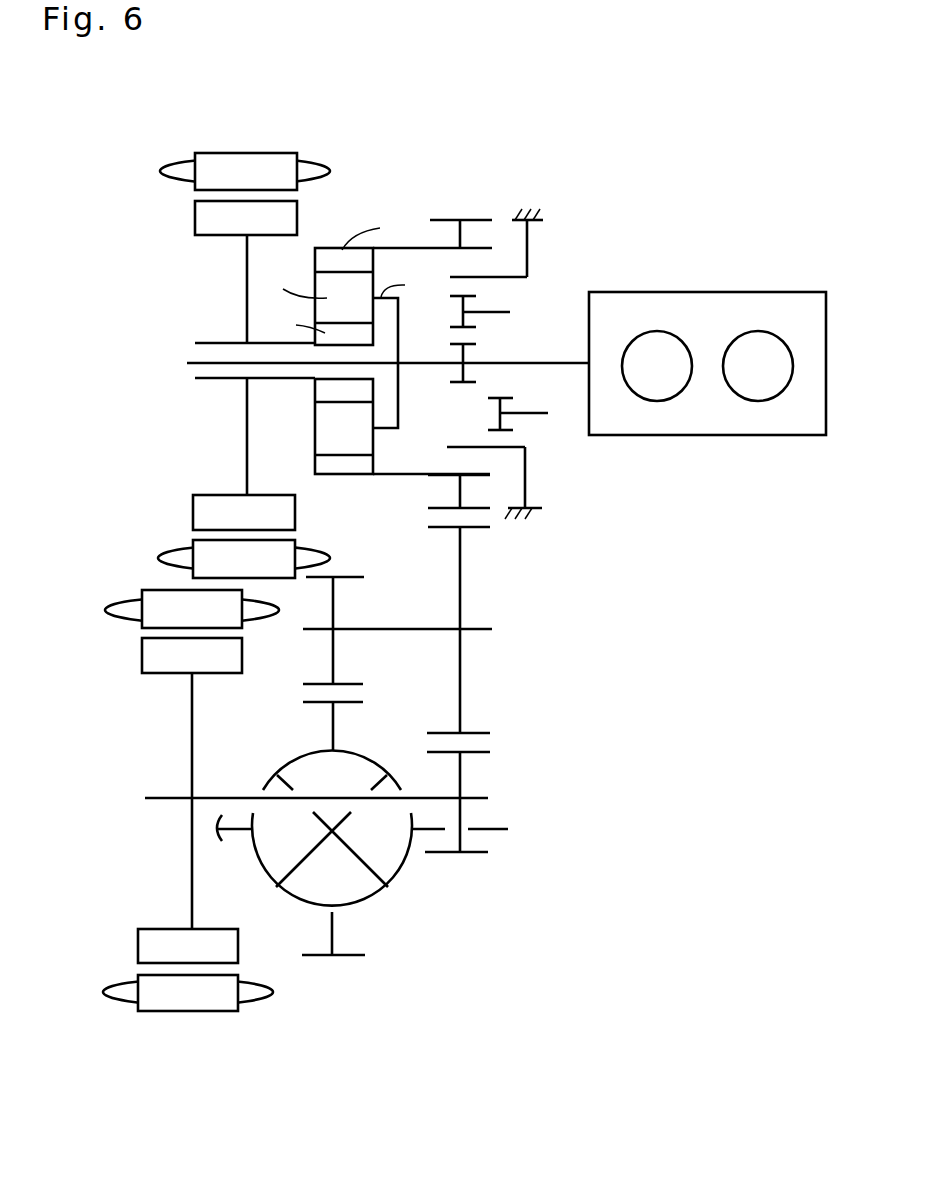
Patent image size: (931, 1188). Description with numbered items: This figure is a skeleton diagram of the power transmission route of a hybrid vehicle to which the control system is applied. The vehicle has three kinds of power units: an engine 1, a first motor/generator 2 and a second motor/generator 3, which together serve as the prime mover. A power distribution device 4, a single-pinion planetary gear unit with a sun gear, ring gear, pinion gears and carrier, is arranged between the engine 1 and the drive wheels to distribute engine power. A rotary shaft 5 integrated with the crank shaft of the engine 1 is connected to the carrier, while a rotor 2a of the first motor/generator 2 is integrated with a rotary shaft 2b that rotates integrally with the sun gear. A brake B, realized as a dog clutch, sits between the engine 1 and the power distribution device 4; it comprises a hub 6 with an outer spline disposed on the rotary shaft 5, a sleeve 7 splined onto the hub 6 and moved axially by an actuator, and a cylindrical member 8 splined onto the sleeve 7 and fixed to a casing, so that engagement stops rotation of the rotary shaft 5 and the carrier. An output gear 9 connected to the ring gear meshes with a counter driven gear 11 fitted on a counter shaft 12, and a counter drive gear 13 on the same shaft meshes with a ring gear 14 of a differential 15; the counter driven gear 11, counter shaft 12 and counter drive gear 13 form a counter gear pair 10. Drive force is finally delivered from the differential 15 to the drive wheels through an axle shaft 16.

The engine 1 is at (760, 292).
The first motor/generator 2 is at (150, 148).
The rotor 2a is at (193, 514).
The rotary shaft 2b is at (280, 383).
The second motor/generator 3 is at (115, 588).
The power distribution device 4 is at (352, 215).
The rotary shaft 5 is at (540, 363).
The hub 6 is at (478, 343).
The sleeve 7 is at (497, 310).
The cylindrical member 8 is at (527, 238).
The output gear 9 is at (428, 507).
The counter gear pair 10 is at (512, 612).
The counter driven gear 11 is at (478, 528).
The counter shaft 12 is at (400, 629).
The counter drive gear 13 is at (352, 682).
The ring gear 14 is at (352, 702).
The differential 15 is at (405, 875).
The axle shaft 16 is at (496, 826).